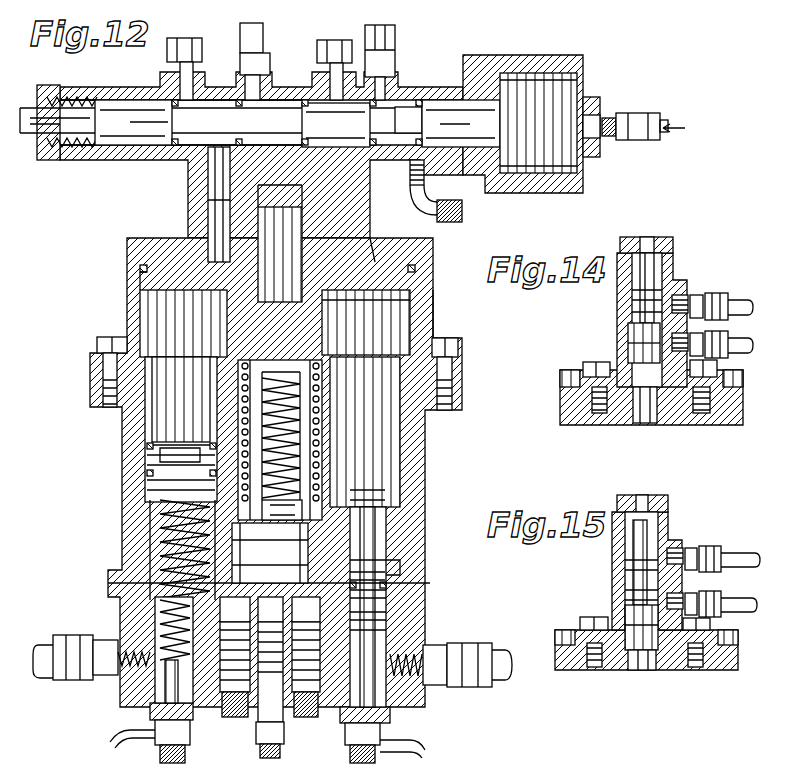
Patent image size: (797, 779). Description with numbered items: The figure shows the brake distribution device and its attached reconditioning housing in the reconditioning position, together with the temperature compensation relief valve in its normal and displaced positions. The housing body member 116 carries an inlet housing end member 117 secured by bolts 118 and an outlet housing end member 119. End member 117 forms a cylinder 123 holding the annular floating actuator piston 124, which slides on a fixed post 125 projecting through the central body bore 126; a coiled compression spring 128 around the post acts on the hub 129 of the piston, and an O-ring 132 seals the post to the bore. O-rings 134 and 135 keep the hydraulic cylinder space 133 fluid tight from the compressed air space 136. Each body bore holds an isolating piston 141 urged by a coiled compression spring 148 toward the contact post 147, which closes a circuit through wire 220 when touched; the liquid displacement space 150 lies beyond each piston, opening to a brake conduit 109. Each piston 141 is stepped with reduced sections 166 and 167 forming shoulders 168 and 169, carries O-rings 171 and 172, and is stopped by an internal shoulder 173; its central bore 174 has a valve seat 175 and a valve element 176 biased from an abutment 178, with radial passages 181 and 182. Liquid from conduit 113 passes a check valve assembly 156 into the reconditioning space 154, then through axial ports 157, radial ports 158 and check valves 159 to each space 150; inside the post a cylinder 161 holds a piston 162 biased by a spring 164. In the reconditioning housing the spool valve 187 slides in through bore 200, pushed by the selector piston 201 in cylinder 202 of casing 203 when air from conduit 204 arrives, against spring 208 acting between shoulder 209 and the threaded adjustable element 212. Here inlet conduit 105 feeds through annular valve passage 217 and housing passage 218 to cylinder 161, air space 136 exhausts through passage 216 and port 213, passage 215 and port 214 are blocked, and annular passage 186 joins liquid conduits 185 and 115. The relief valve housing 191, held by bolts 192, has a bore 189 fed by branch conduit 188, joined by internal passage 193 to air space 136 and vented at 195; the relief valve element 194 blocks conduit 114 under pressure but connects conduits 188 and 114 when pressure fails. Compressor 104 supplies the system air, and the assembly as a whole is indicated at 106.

In FIG. 12, the compressor 104 is at (505, 685).
In FIG. 12, the conduit 105 is at (240, 28).
In FIG. 12, the valve assembly 106 is at (78, 474).
In FIG. 12, the brake conduit 109 is at (45, 672).
In FIG. 12, the conduit 113 is at (270, 752).
In FIG. 14, the conduit 114 is at (735, 345).
In FIG. 15, the conduit 114 is at (745, 613).
In FIG. 12, the conduit 115 is at (380, 27).
In FIG. 12, the housing body member 116 is at (415, 452).
In FIG. 12, the inlet housing end member 117 is at (425, 295).
In FIG. 14, the inlet housing end member 117 is at (735, 413).
In FIG. 12, the bolt 118 is at (460, 346).
In FIG. 12, the outlet housing end member 119 is at (415, 703).
In FIG. 12, the cylinder 123 is at (140, 320).
In FIG. 12, the floating actuator piston 124 is at (415, 256).
In FIG. 12, the fixed post 125 is at (340, 383).
In FIG. 12, the central body bore 126 is at (340, 405).
In FIG. 12, the coiled compression spring 128 is at (335, 412).
In FIG. 12, the hub 129 is at (320, 337).
In FIG. 12, the O-ring 132 is at (228, 513).
In FIG. 12, the cylinder space 133 is at (405, 320).
In FIG. 12, the O-ring 134 is at (140, 268).
In FIG. 12, the O-ring 135 is at (318, 270).
In FIG. 12, the compressed air space 136 is at (375, 258).
In FIG. 12, the isolating piston 141 is at (400, 500).
In FIG. 12, the contact post 147 is at (150, 712).
In FIG. 12, the coiled compression spring 148 is at (165, 533).
In FIG. 12, the liquid displacement space 150 is at (165, 550).
In FIG. 12, the hydraulic liquid reconditioning space 154 is at (270, 553).
In FIG. 12, the check valve assembly 156 is at (265, 730).
In FIG. 12, the axial port 157 is at (270, 570).
In FIG. 12, the radial port 158 is at (306, 700).
In FIG. 12, the check valve 159 is at (225, 582).
In FIG. 12, the cylinder 161 is at (295, 230).
In FIG. 12, the piston 162 is at (295, 325).
In FIG. 12, the compression spring 164 is at (340, 448).
In FIG. 12, the reduced cylindrical section 166 is at (385, 560).
In FIG. 12, the reduced cylindrical section 167 is at (385, 630).
In FIG. 12, the shoulder 168 is at (385, 572).
In FIG. 12, the shoulder 169 is at (392, 598).
In FIG. 12, the O-ring 171 is at (390, 585).
In FIG. 12, the O-ring 172 is at (392, 583).
In FIG. 12, the internal shoulder 173 is at (388, 618).
In FIG. 12, the central bore 174 is at (395, 540).
In FIG. 12, the valve seat 175 is at (420, 513).
In FIG. 12, the valve element 176 is at (376, 500).
In FIG. 12, the abutment 178 is at (385, 490).
In FIG. 12, the radial passage 181 is at (180, 445).
In FIG. 12, the radial passage 182 is at (400, 565).
In FIG. 12, the conduit 185 is at (462, 210).
In FIG. 12, the annular valve passage 186 is at (408, 107).
In FIG. 12, the spool valve 187 is at (448, 120).
In FIG. 14, the branch conduit 188 is at (733, 300).
In FIG. 15, the branch conduit 188 is at (745, 560).
In FIG. 14, the bore 189 is at (670, 290).
In FIG. 15, the bore 189 is at (628, 578).
In FIG. 14, the relief valve housing 191 is at (620, 320).
In FIG. 15, the relief valve housing 191 is at (670, 530).
In FIG. 14, the bolt 192 is at (715, 368).
In FIG. 14, the internal passage 193 is at (650, 425).
In FIG. 15, the internal passage 193 is at (646, 672).
In FIG. 14, the relief valve element 194 is at (630, 345).
In FIG. 15, the relief valve element 194 is at (620, 620).
In FIG. 14, the vent 195 is at (655, 245).
In FIG. 15, the vent 195 is at (647, 500).
In FIG. 12, the through bore 200 is at (115, 100).
In FIG. 12, the selector piston 201 is at (517, 58).
In FIG. 12, the cylinder 202 is at (553, 60).
In FIG. 12, the casing 203 is at (585, 67).
In FIG. 12, the air pressure outlet conduit 204 is at (655, 128).
In FIG. 12, the coiled compression spring 208 is at (62, 148).
In FIG. 12, the axial valve shoulder 209 is at (92, 147).
In FIG. 12, the threaded adjustable element 212 is at (40, 160).
In FIG. 12, the air exhaust port 213 is at (186, 40).
In FIG. 12, the air exhaust port 214 is at (327, 42).
In FIG. 12, the annular valve passage 215 is at (218, 100).
In FIG. 12, the housing passage 216 is at (214, 227).
In FIG. 12, the annular valve passage 217 is at (288, 100).
In FIG. 12, the housing passage 218 is at (293, 185).
In FIG. 12, the wire 220 is at (130, 742).